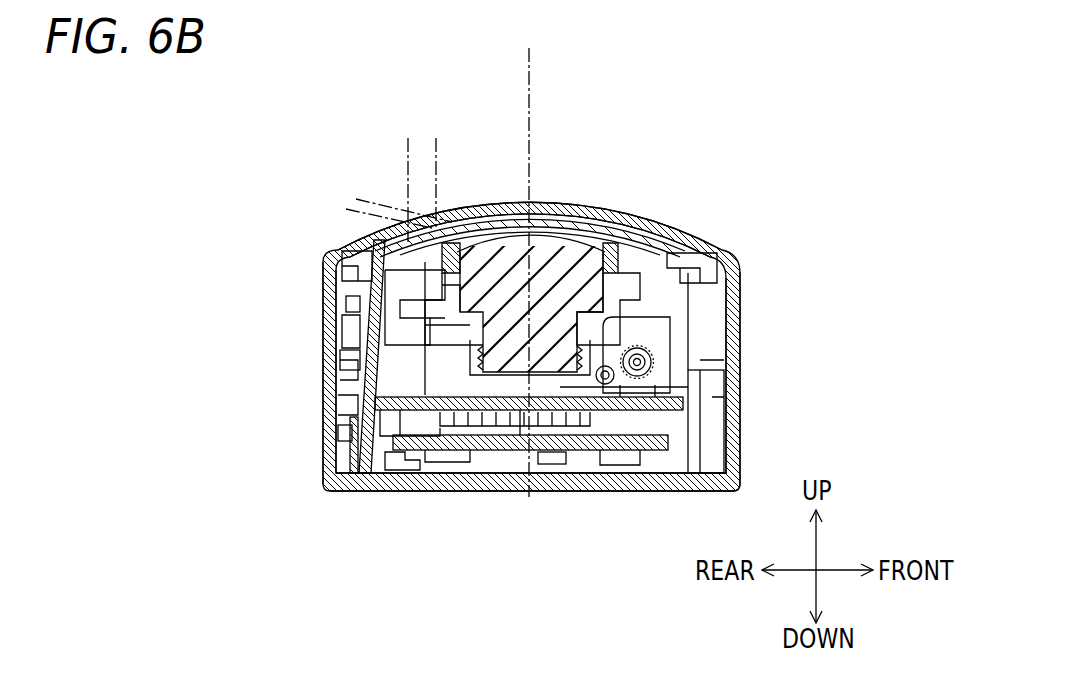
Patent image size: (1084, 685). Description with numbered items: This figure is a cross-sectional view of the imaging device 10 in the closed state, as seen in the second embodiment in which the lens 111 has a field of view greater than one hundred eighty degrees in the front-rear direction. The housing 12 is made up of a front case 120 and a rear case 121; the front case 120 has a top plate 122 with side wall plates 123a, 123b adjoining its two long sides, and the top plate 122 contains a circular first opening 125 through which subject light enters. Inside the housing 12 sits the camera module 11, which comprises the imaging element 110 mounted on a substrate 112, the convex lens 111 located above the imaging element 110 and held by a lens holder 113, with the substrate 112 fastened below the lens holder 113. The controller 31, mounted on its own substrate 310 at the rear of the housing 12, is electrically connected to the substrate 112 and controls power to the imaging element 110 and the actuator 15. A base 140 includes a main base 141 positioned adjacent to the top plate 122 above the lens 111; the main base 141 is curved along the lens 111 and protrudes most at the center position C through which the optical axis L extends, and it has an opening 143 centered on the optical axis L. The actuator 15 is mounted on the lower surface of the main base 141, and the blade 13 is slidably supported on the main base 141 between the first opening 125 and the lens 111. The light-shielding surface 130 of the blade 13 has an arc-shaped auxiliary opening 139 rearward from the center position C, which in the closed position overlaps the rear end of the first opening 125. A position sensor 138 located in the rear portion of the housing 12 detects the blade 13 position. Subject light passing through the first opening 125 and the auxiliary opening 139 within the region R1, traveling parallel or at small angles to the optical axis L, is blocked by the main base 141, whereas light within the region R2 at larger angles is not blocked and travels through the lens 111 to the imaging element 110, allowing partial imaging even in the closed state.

The imaging device 10 is at (160, 311).
The front case 120 is at (186, 206).
The top plate 122 is at (703, 233).
The rear case 121 is at (745, 456).
The side wall plate 123a is at (740, 302).
The side wall plate 123b is at (322, 271).
The housing 12 is at (283, 452).
The light-shielding surface 130 is at (530, 179).
The blade 13 is at (503, 203).
The first opening 125 is at (533, 234).
The opening 143 is at (562, 212).
The lens 111 is at (619, 254).
The camera module 11 is at (655, 248).
The auxiliary opening 139 is at (376, 258).
The base 140 is at (316, 241).
The main base 141 is at (335, 252).
The actuator 15 is at (385, 313).
The position sensor 138 is at (345, 340).
The controller 31 is at (350, 374).
The substrate 310 is at (340, 432).
The substrate 112 is at (400, 442).
The imaging element 110 is at (507, 440).
The lens holder 113 is at (553, 460).
The optical axis L is at (528, 100).
The center position C is at (550, 203).
The region R1 is at (422, 178).
The region R2 is at (390, 217).